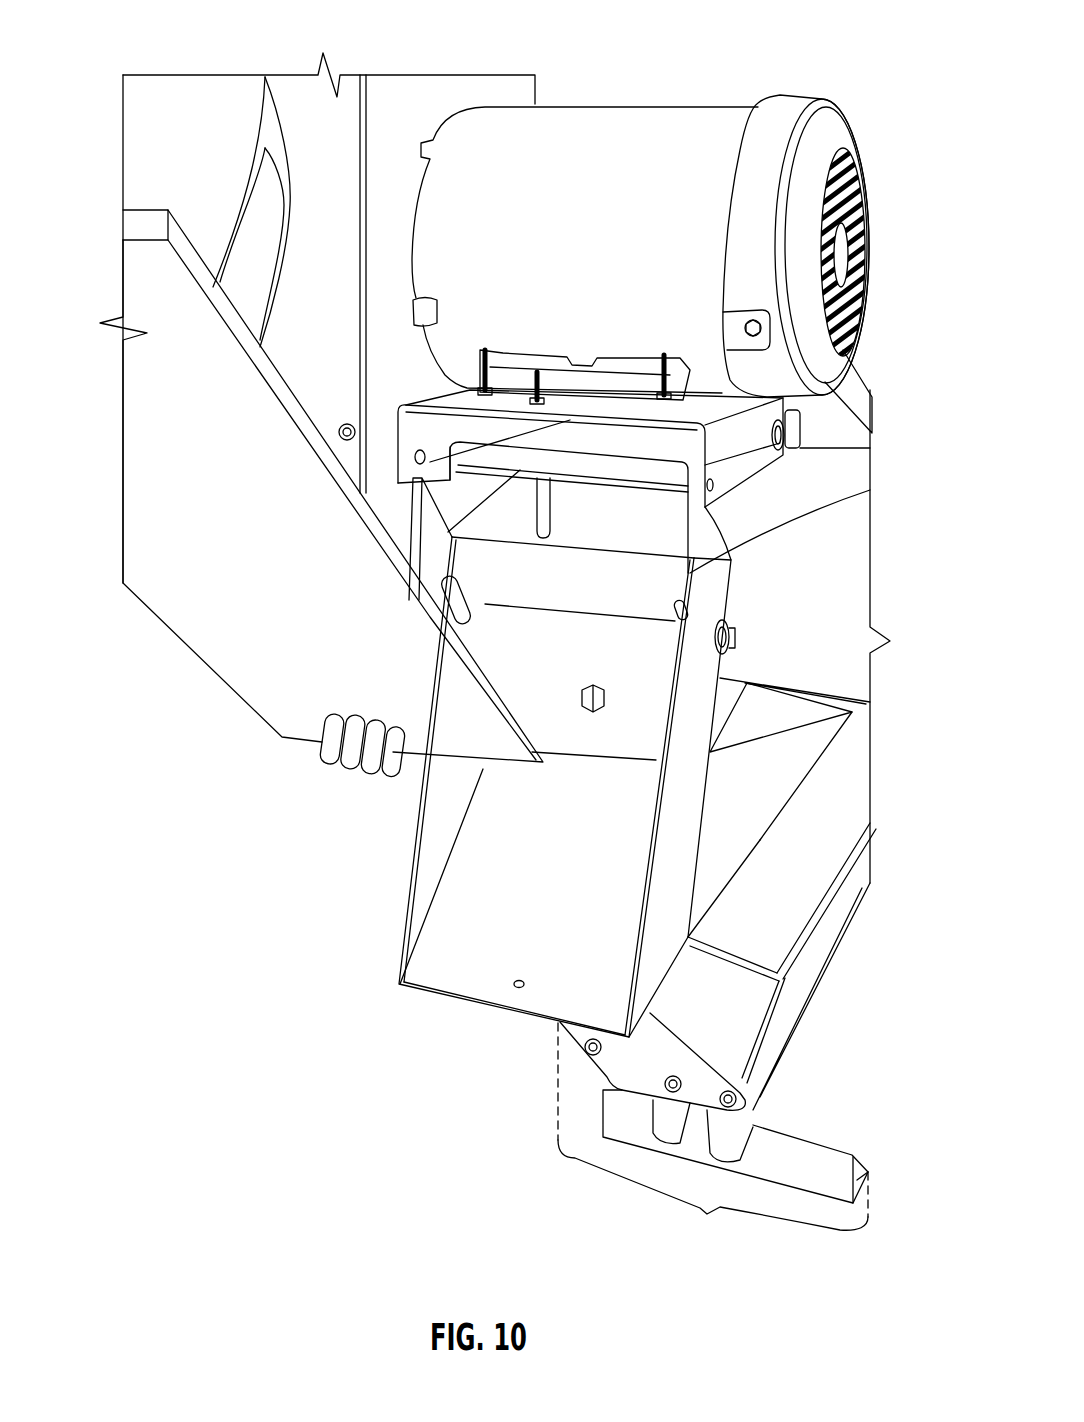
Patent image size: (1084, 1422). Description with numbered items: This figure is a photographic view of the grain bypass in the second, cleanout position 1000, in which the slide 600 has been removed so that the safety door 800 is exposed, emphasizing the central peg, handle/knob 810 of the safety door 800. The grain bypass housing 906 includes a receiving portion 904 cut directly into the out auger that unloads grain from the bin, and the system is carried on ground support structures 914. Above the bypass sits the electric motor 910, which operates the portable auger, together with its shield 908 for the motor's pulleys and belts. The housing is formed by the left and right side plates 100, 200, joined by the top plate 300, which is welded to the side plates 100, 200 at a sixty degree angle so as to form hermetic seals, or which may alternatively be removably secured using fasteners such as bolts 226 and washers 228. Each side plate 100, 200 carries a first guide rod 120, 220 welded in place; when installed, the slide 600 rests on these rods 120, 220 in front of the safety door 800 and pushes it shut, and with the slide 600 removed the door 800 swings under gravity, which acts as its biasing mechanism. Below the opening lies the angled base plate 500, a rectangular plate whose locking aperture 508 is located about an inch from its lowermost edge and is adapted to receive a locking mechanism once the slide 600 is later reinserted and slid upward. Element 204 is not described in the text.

The second, cleanout position with slide removed 1000 is at (317, 292).
The shield for motor pulleys and belts 908 is at (289, 284).
The electric motor 910 is at (646, 255).
The slide 600 is at (295, 494).
The grain bypass housing 906 is at (865, 391).
The receiving portion adapted to receive out auger 904 is at (790, 636).
The top plate 300 is at (672, 505).
The side plate 100 is at (530, 772).
The safety door 800 is at (739, 653).
The first rod 220 is at (720, 597).
The bolt 226 is at (829, 680).
The washer 228 is at (827, 752).
The handle/knob 810 is at (763, 772).
The first rod 120 is at (401, 617).
The angled base plate 500 is at (476, 968).
The locking aperture 508 is at (563, 966).
The chute side wall 204 is at (798, 905).
The side plate 200 is at (766, 966).
The ground support structures for grain bypass system 914 is at (713, 1135).